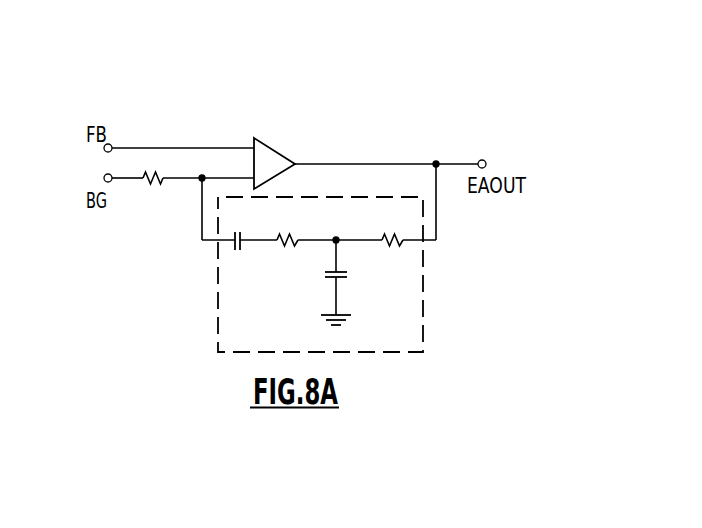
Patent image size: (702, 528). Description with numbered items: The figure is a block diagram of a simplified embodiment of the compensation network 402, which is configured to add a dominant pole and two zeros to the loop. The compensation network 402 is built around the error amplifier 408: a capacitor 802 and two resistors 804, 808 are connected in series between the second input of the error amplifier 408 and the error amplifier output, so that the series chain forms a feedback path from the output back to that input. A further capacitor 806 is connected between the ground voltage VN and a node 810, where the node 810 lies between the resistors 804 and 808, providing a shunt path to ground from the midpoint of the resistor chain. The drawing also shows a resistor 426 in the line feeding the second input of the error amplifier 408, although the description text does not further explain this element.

The error amplifier 408 is at (272, 147).
The resistor 426 is at (154, 182).
The compensation network 402 is at (268, 338).
The capacitor 802 is at (241, 247).
The resistor 804 is at (283, 238).
The capacitor 806 is at (342, 278).
The resistor 808 is at (390, 237).
The node 810 is at (336, 237).